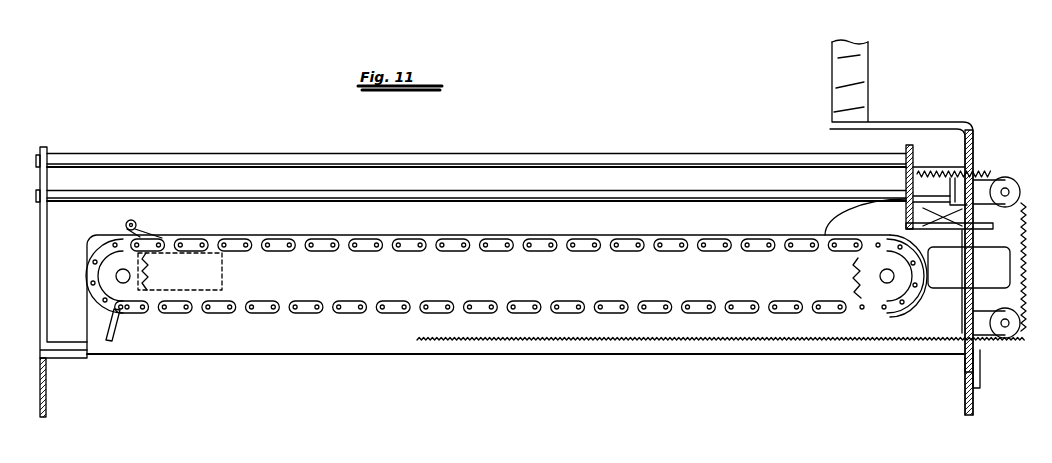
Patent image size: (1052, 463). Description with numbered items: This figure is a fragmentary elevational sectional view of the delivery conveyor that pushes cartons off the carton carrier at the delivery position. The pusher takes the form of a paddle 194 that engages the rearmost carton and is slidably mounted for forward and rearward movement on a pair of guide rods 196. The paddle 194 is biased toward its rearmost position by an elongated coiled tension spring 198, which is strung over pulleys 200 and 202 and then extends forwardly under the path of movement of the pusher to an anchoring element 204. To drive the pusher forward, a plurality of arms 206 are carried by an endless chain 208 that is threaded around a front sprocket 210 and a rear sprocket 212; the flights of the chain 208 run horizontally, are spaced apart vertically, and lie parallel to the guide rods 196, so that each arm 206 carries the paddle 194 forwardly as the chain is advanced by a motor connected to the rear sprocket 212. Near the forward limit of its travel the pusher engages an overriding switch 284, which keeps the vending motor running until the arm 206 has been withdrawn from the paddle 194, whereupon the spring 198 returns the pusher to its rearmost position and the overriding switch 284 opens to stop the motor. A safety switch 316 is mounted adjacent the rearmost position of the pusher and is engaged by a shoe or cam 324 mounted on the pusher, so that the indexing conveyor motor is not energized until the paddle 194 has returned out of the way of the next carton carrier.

The paddle 194 is at (906, 148).
The guide rods 196 is at (615, 192).
The coiled tension spring 198 is at (984, 172).
The pulley 200 is at (1003, 177).
The pulley 202 is at (1003, 338).
The anchoring element 204 is at (417, 342).
The arms 206 is at (920, 238).
The endless chain 208 is at (343, 308).
The front sprocket 210 is at (148, 273).
The rear sprocket 212 is at (860, 273).
The overriding switch 284 is at (126, 224).
The safety switch 316 is at (945, 284).
The shoe or cam 324 is at (950, 217).